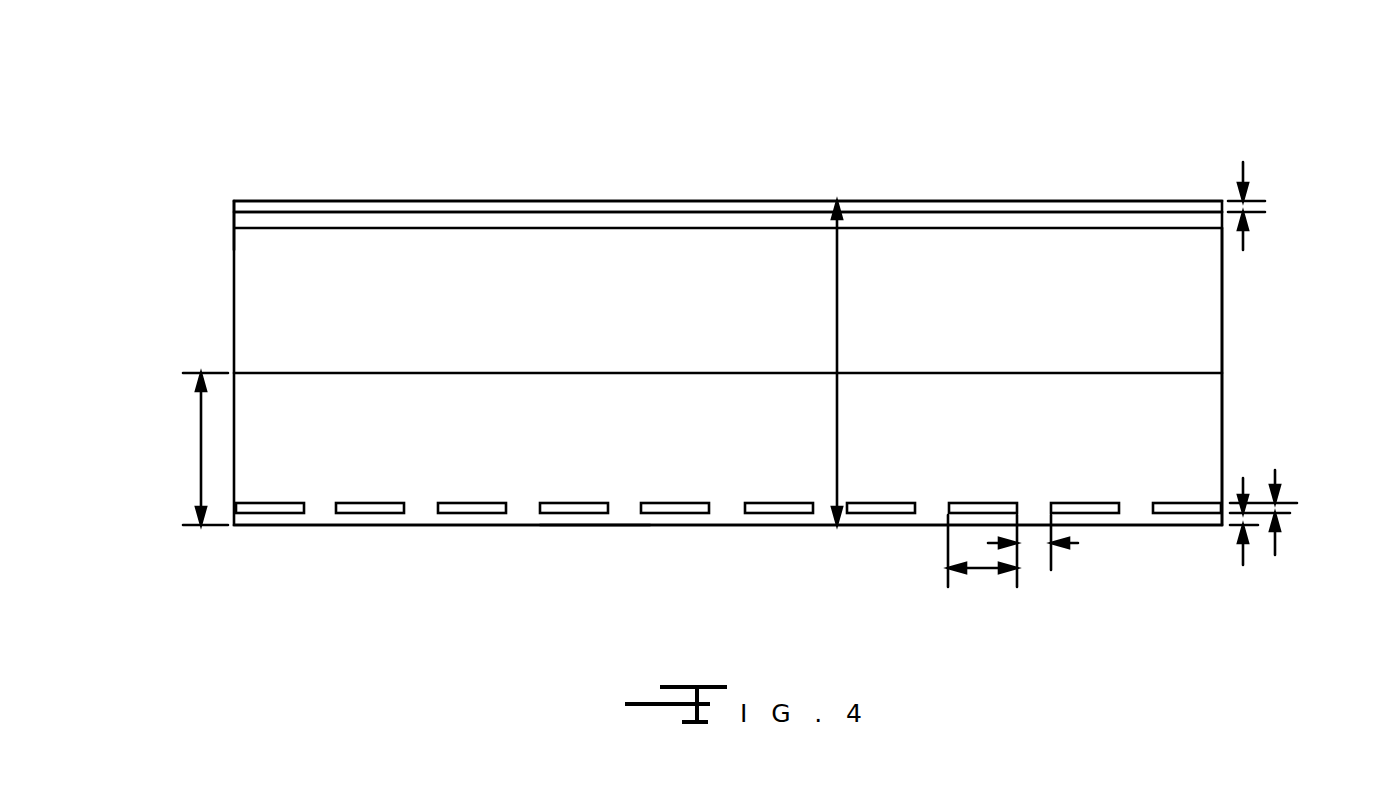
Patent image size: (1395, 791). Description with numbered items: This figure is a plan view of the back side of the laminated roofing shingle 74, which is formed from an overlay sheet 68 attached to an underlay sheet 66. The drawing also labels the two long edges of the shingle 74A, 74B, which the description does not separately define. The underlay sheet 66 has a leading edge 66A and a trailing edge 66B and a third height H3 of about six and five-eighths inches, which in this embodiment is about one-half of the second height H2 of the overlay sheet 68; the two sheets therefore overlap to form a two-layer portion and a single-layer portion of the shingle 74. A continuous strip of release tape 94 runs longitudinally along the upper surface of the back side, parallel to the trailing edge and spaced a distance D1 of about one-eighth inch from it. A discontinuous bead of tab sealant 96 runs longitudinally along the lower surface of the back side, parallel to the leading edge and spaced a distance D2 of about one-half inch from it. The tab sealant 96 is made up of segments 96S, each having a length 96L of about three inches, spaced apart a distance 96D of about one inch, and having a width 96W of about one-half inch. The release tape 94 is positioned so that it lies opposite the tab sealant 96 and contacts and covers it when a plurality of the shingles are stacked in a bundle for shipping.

The laminated roofing shingle 74 is at (406, 130).
The first side of panel 74A is at (590, 527).
The second side of panel 74B is at (978, 200).
The overlay sheet 68 is at (226, 242).
The release tape 94 is at (662, 220).
The underlay sheet 66 is at (1234, 390).
The leading edge of underlay sheet 66A is at (315, 527).
The trailing edge of underlay sheet 66B is at (510, 373).
The tab sealant 96 is at (1096, 525).
The tab sealant segments 96S is at (887, 500).
The segment length 96L is at (985, 572).
The segment spacing distance 96D is at (1075, 545).
The segment width 96W is at (1275, 470).
The second height of overlay sheet H2 is at (837, 272).
The third height of underlay sheet H3 is at (200, 420).
The release tape spacing distance D1 is at (1243, 170).
The tab sealant spacing distance D2 is at (1243, 550).